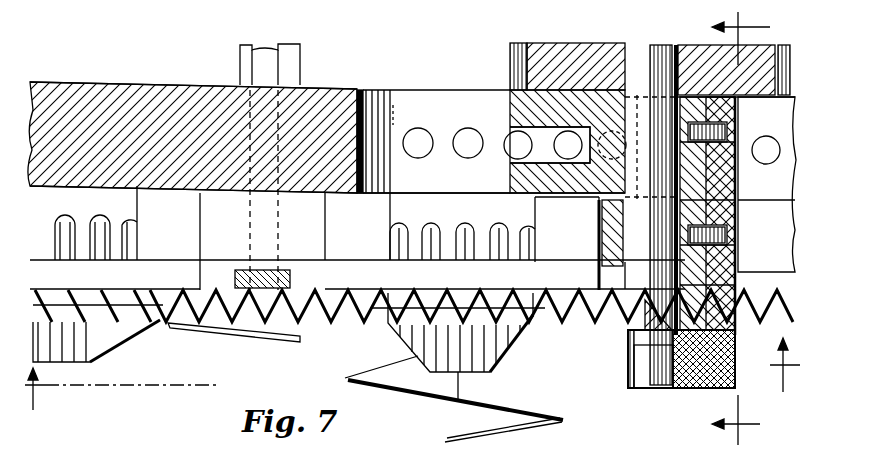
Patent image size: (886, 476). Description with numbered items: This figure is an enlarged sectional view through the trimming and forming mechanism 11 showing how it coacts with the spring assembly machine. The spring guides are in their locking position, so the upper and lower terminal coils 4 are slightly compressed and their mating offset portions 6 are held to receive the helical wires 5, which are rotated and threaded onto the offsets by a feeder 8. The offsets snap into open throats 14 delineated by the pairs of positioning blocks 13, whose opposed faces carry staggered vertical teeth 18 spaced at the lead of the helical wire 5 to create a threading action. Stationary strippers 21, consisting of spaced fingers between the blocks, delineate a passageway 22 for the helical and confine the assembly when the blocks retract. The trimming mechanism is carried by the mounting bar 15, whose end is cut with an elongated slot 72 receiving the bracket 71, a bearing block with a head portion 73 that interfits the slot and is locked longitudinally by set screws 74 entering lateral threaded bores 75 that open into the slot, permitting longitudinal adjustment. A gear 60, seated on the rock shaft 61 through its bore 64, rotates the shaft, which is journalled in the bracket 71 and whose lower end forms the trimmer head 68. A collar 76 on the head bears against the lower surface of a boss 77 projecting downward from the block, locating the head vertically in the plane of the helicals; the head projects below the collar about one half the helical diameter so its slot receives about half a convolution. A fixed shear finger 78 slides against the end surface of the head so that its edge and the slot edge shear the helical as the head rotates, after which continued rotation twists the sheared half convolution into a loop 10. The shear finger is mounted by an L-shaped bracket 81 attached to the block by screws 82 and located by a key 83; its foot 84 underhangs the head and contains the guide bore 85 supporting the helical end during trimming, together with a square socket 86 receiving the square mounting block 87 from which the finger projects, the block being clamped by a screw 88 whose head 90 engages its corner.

The terminal coil 4 is at (442, 402).
The helical wire 5 is at (222, 288).
The offset portion 6 is at (514, 344).
The feeder 8 is at (412, 391).
The loop 10 is at (758, 233).
The trimming and forming mechanism 11 is at (540, 33).
The positioning block 13 is at (474, 378).
The open throat 14 is at (458, 405).
The mounting bar 15 is at (166, 112).
The teeth 18 is at (82, 352).
The stationary stripper 21 is at (282, 336).
The passageway 22 is at (246, 314).
The gear 60 is at (540, 62).
The rock shaft 61 is at (668, 46).
The bore 64 is at (618, 56).
The trimmer head 68 is at (628, 338).
The bracket 71 is at (541, 177).
The slot 72 is at (413, 108).
The head portion 73 is at (606, 60).
The set screw 74 is at (638, 137).
The threaded bore 75 is at (466, 138).
The collar 76 is at (618, 284).
The boss 77 is at (598, 238).
The shear finger 78 is at (628, 337).
The L-shaped bracket 81 is at (740, 262).
The screw 82 is at (740, 128).
The key 83 is at (740, 185).
The foot 84 is at (690, 392).
The guide bore 85 is at (733, 335).
The square socket 86 is at (658, 390).
The mounting block 87 is at (640, 390).
The screw 88 is at (710, 384).
The head 90 is at (737, 386).